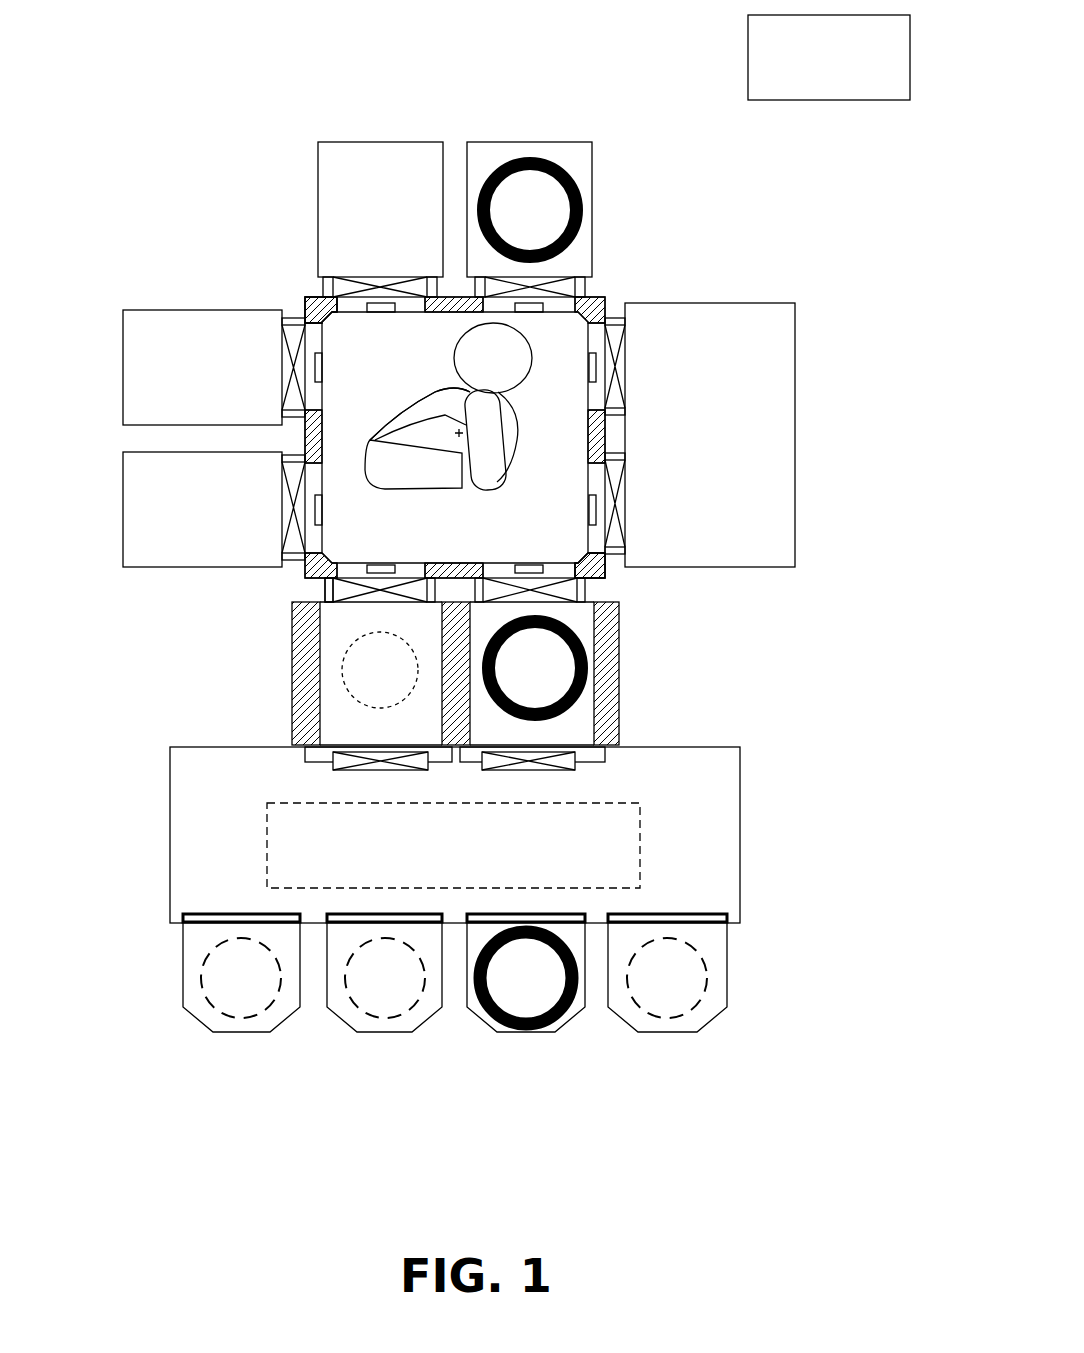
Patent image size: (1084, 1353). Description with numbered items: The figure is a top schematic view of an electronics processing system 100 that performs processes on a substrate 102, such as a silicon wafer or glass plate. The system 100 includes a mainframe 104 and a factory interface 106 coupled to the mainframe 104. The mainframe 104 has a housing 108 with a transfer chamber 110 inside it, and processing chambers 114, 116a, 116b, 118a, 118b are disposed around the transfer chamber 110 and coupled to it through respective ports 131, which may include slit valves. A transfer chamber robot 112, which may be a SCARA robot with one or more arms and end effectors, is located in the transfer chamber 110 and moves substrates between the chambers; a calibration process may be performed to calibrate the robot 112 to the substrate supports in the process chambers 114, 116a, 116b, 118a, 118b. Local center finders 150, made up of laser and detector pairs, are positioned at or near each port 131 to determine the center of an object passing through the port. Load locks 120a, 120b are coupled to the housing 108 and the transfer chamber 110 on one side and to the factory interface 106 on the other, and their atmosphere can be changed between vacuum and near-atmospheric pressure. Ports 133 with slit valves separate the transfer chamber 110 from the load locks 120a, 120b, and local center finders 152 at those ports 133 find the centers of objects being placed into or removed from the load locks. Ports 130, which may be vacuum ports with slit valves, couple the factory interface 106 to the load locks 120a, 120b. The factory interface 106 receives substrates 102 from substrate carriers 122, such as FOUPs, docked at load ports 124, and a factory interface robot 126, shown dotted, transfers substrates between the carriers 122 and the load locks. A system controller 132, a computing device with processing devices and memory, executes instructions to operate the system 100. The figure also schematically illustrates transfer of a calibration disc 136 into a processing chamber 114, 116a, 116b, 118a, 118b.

The electronics processing system 100 is at (208, 175).
The substrate 102 is at (512, 370).
The mainframe 104 is at (625, 280).
The factory interface 106 is at (160, 830).
The housing 108 is at (605, 578).
The transfer chamber 110 is at (468, 539).
The transfer chamber robot 112 is at (432, 380).
The processing chamber 114 is at (729, 445).
The processing chamber 116a is at (403, 222).
The processing chamber 116b is at (513, 142).
The processing chamber 118a is at (226, 379).
The processing chamber 118b is at (226, 521).
The load lock 120a is at (285, 655).
The load lock 120b is at (632, 692).
The substrate carrier 122 is at (237, 1035).
The load port 124 is at (207, 925).
The factory interface robot 126 is at (640, 872).
The port 130 is at (545, 775).
The port 131 is at (297, 310).
The system controller 132 is at (828, 100).
The port 133 is at (322, 592).
The calibration disc 136 is at (548, 222).
The local center finder 150 is at (380, 312).
The local center finder 152 is at (390, 563).